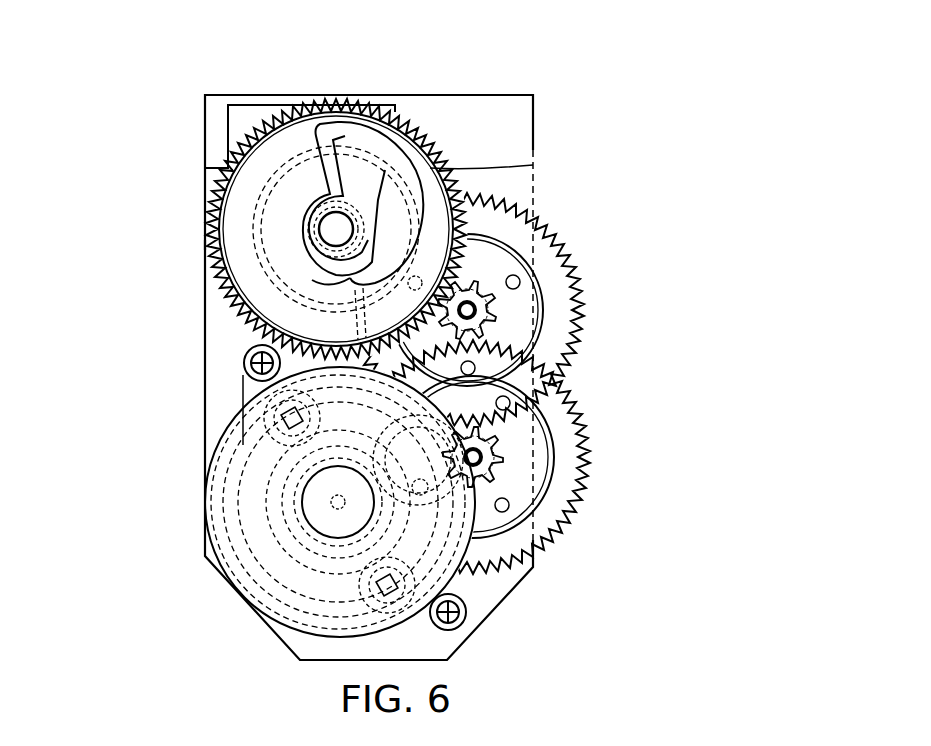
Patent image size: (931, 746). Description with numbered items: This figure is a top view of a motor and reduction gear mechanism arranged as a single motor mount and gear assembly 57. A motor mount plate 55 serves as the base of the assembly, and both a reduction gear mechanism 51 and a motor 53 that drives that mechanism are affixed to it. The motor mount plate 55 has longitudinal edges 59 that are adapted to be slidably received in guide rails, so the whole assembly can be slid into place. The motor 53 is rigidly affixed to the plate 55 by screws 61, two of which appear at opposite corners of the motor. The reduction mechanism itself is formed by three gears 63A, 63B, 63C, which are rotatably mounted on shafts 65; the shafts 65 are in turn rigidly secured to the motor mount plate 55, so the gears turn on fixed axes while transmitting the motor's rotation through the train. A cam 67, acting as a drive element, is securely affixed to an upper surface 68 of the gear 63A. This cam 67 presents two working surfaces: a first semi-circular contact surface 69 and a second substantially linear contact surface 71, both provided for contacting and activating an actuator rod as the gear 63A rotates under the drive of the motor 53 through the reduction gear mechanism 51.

The reduction gear mechanism 51 is at (718, 87).
The motor 53 is at (258, 573).
The motor mount plate 55 is at (465, 127).
The motor mount and gear assembly 57 is at (80, 128).
The longitudinal edges 59 is at (533, 140).
The screws 61 is at (247, 371).
The gear 63A is at (272, 168).
The gear 63B is at (573, 263).
The gear 63C is at (578, 410).
The shafts 65 is at (480, 303).
The cam 67 is at (377, 177).
The upper surface 68 is at (270, 268).
The first semi-circular contact surface 69 is at (533, 165).
The second substantially linear contact surface 71 is at (228, 168).